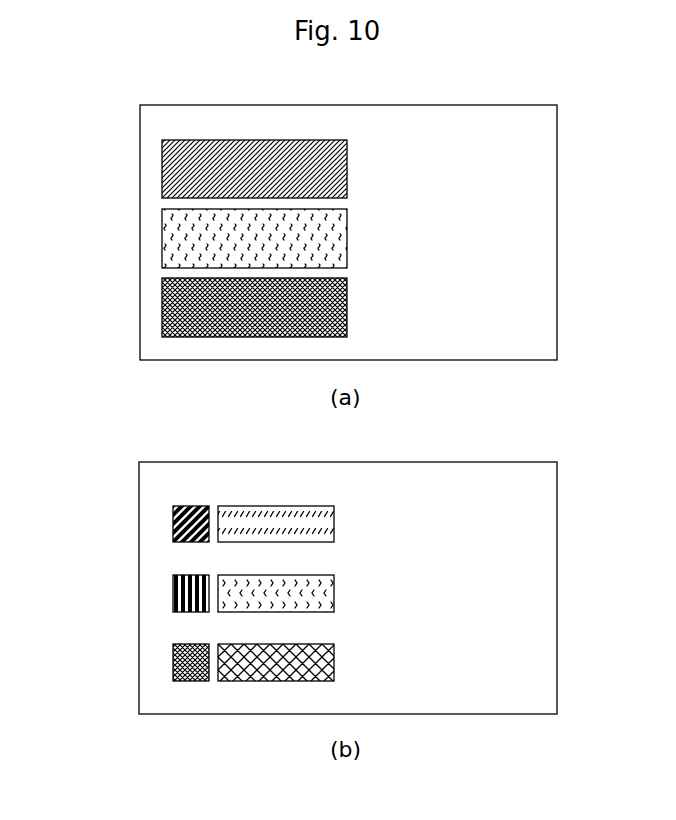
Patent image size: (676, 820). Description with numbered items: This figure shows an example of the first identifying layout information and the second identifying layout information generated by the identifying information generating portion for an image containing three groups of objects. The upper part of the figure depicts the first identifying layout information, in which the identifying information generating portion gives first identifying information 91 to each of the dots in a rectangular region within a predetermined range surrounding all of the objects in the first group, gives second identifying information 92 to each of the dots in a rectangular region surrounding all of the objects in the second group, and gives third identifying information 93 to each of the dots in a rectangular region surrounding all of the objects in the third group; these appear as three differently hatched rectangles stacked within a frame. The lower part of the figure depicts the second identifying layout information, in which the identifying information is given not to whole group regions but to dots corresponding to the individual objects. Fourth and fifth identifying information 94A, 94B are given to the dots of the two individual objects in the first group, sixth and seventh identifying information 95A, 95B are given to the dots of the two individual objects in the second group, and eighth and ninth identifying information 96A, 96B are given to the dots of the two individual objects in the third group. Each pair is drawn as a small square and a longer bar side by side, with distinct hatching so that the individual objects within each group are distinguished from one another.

The first identifying information 91 is at (347, 171).
The second identifying information 92 is at (347, 240).
The third identifying information 93 is at (347, 307).
The fourth identifying information 94A is at (173, 530).
The fifth identifying information 94B is at (334, 527).
The sixth identifying information 95A is at (173, 600).
The seventh identifying information 95B is at (334, 597).
The eighth identifying information 96A is at (173, 669).
The ninth identifying information 96B is at (334, 666).